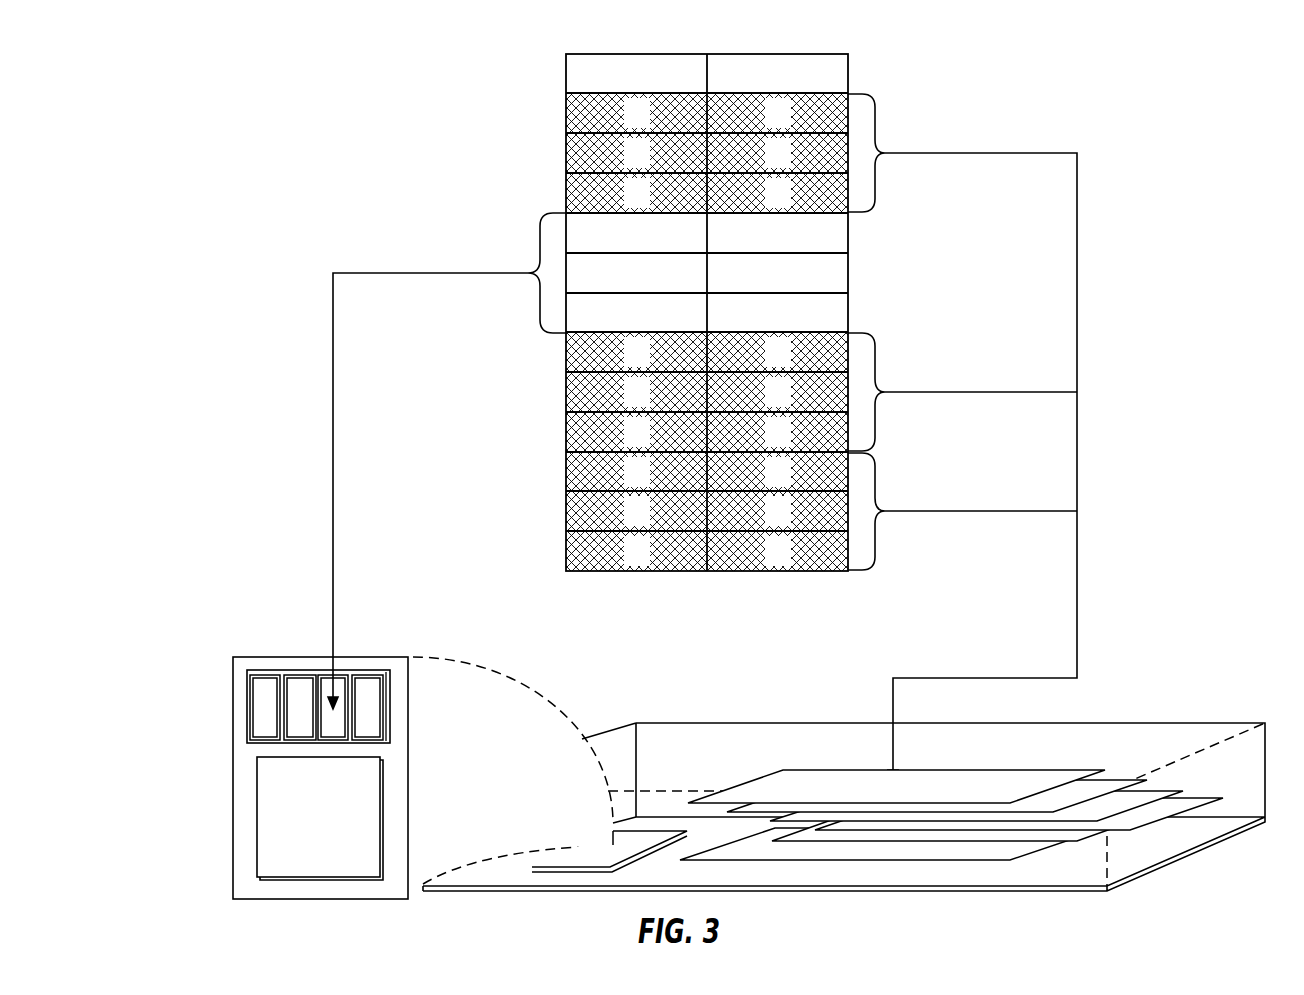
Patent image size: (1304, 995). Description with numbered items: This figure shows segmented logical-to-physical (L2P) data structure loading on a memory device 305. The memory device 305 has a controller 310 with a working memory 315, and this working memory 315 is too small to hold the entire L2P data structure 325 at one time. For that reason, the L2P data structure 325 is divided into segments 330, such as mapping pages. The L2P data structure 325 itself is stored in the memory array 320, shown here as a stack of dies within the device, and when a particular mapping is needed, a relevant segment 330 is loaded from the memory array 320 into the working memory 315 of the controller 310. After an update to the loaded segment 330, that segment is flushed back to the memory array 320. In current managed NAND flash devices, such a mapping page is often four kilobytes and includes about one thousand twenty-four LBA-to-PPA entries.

The memory device 305 is at (1198, 723).
The controller 310 is at (257, 818).
The working memory 315 is at (247, 703).
The memory array 320 is at (819, 778).
The L2P data structure 325 is at (566, 84).
The segments 330 is at (541, 216).